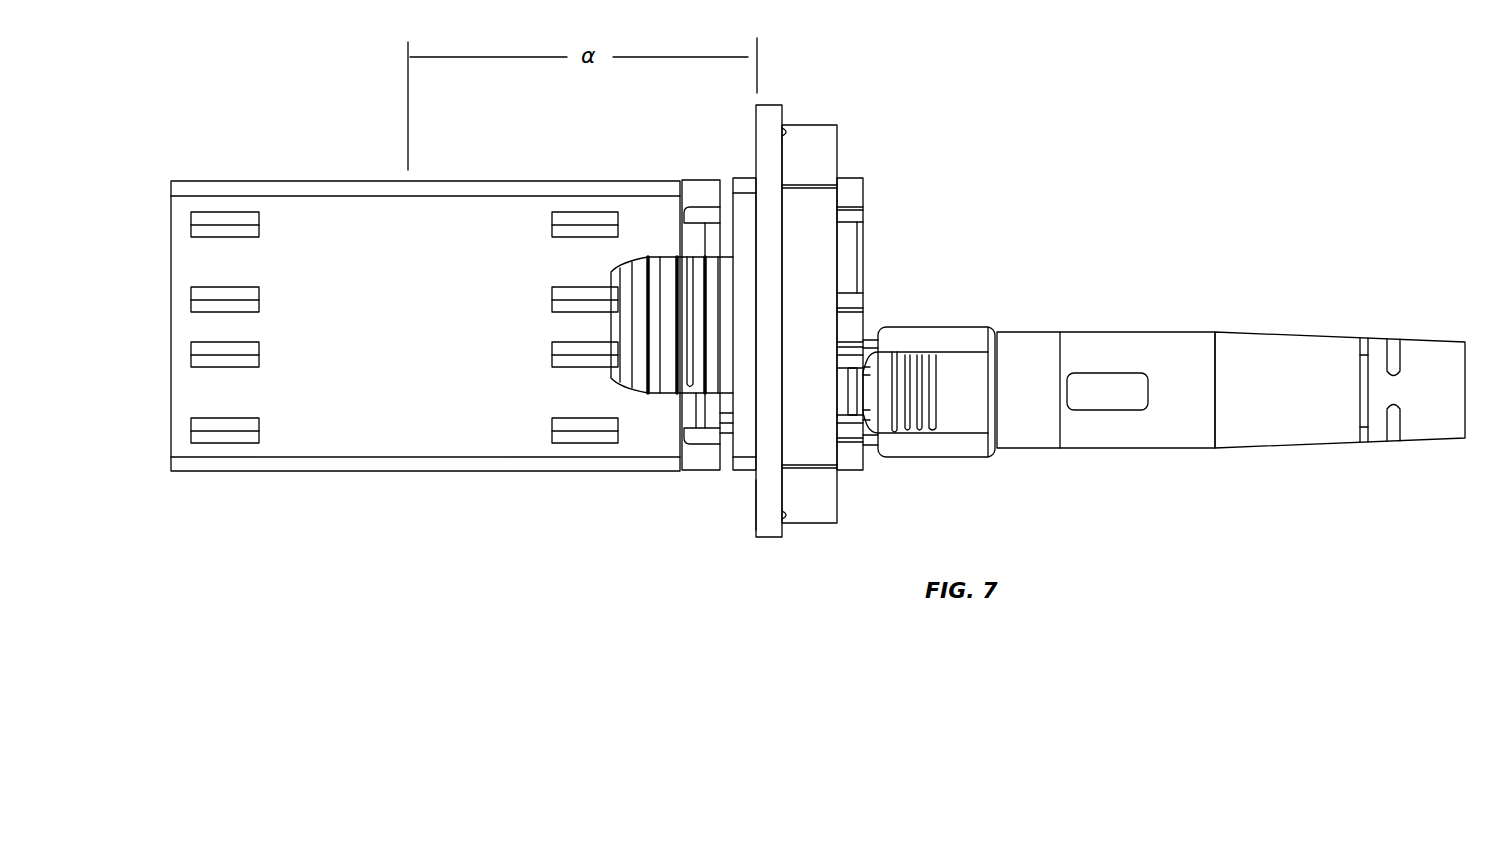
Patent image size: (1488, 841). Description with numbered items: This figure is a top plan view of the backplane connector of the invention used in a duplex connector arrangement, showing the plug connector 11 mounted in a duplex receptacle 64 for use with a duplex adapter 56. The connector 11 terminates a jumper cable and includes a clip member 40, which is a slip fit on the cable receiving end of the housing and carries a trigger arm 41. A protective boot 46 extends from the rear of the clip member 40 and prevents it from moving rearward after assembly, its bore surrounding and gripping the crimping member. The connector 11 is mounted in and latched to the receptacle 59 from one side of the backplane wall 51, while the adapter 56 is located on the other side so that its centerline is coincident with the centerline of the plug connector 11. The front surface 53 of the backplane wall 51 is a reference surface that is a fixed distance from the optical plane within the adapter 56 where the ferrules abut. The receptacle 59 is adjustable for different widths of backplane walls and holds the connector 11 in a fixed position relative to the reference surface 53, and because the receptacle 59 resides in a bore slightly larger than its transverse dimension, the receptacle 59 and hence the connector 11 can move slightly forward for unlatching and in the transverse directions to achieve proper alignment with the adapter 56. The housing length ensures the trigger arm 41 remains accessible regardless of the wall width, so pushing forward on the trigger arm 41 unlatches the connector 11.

The connector 11 is at (1117, 482).
The clip member 40 is at (933, 373).
The trigger arm 41 is at (963, 418).
The protective boot 46 is at (1130, 332).
The backplane wall 51 is at (767, 545).
The front surface 53 is at (755, 507).
The adapter 56 is at (333, 472).
The receptacle 59 is at (808, 125).
The duplex receptacle 64 is at (745, 178).